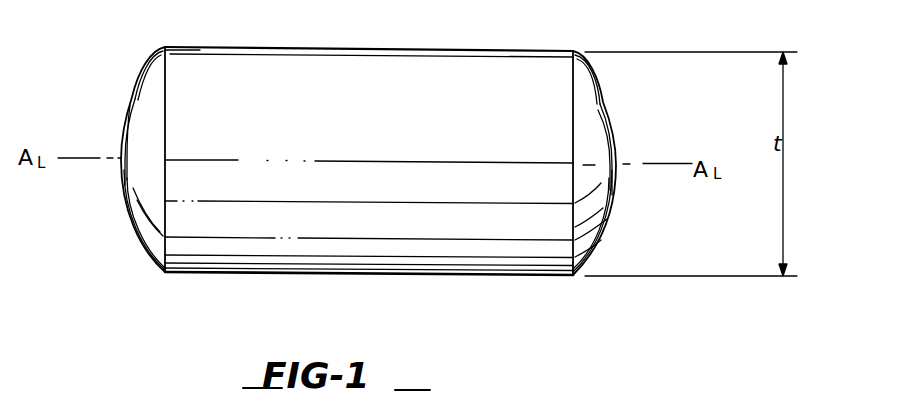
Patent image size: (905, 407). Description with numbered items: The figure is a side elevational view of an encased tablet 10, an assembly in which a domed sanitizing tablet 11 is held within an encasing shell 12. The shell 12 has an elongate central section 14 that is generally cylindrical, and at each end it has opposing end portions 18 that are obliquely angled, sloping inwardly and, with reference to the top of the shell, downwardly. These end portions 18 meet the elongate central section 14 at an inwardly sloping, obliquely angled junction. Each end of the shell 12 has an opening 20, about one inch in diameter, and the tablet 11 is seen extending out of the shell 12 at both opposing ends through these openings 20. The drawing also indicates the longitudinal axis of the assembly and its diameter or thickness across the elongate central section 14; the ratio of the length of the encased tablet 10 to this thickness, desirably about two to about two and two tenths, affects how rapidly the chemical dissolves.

The encased tablet 10 is at (508, 43).
The tablet 11 is at (124, 185).
The shell 12 is at (337, 48).
The elongate central section 14 is at (377, 133).
The end portions 18 is at (143, 72).
The openings 20 is at (127, 115).